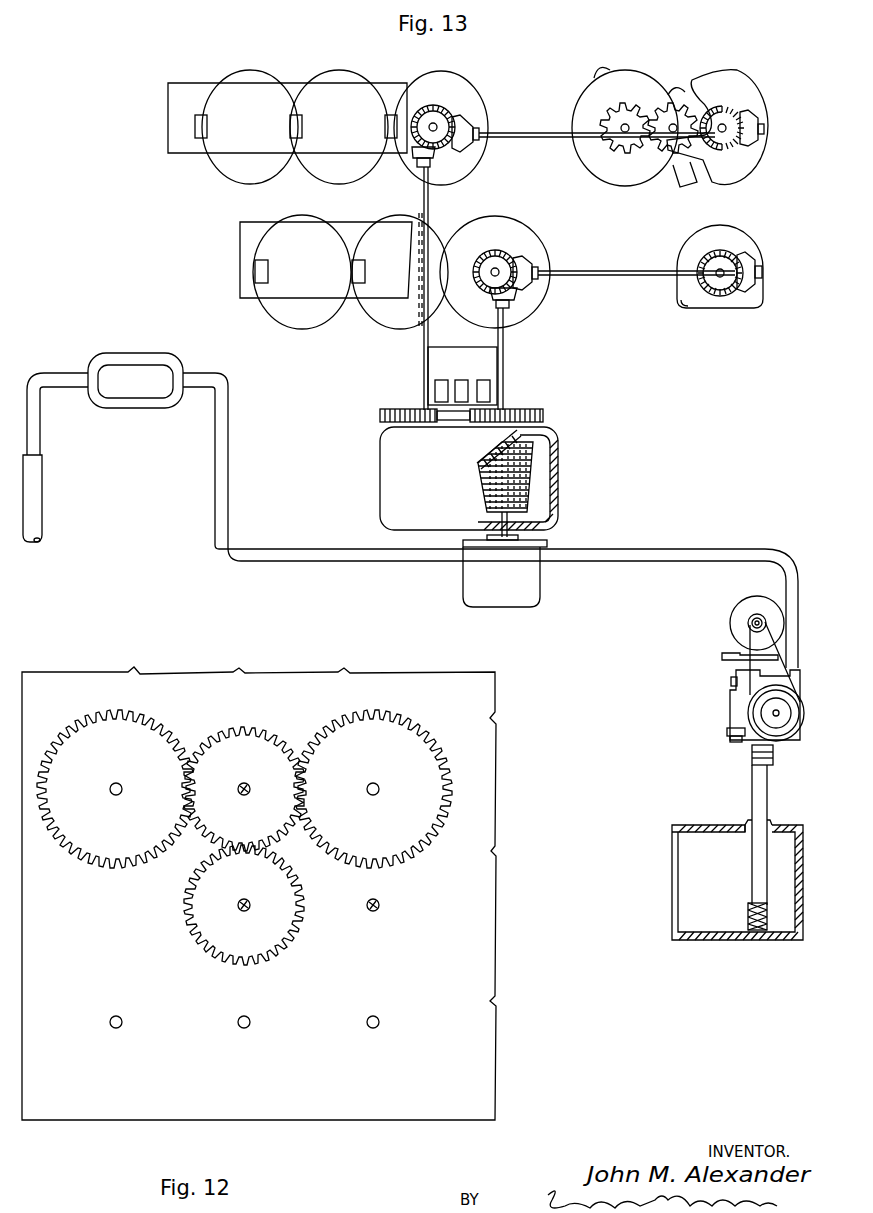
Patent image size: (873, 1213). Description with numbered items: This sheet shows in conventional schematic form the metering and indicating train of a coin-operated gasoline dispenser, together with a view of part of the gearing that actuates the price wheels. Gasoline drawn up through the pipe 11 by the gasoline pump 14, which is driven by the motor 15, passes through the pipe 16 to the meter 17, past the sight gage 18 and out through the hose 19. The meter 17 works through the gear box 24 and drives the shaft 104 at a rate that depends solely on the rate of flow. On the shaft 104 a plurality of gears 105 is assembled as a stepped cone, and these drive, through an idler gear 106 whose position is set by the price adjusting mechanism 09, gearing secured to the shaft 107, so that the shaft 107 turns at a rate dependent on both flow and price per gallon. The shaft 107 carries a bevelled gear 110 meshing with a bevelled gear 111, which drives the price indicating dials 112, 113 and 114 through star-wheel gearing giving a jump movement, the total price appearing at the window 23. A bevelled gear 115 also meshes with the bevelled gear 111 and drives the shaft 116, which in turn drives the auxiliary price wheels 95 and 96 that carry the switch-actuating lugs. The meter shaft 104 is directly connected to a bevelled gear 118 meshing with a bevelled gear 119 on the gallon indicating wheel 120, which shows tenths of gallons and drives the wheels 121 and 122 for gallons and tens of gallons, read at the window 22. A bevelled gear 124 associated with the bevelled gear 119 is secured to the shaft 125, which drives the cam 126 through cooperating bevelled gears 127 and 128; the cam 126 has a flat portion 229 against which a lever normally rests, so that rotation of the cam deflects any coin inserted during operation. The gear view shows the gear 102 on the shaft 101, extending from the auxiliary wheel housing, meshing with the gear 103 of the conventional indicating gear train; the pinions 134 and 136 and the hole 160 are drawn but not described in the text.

In FIG. 13, the pipe 11 is at (756, 791).
In FIG. 13, the gasoline pump 14 is at (733, 710).
In FIG. 13, the motor 15 is at (734, 619).
In FIG. 13, the pipe 16 is at (684, 555).
In FIG. 13, the meter 17 is at (528, 582).
In FIG. 13, the sight gage 18 is at (150, 386).
In FIG. 13, the hose 19 is at (40, 508).
In FIG. 13, the window 22 is at (258, 272).
In FIG. 13, the window 23 is at (193, 142).
In FIG. 13, the gear box 24 is at (395, 478).
In FIG. 13, the indicating wheel 95 is at (652, 92).
In FIG. 13, the indicating wheel 96 is at (725, 82).
In FIG. 13, the price adjusting mechanism 09 is at (503, 362).
In FIG. 12, the shaft 101 is at (238, 908).
In FIG. 12, the gear 102 is at (216, 946).
In FIG. 12, the gear 103 is at (258, 748).
In FIG. 13, the shaft 104 is at (505, 386).
In FIG. 13, the gears 105 is at (532, 479).
In FIG. 13, the idler gear 106 is at (481, 473).
In FIG. 13, the shaft 107 is at (426, 376).
In FIG. 13, the bevelled gear 110 is at (433, 162).
In FIG. 13, the bevelled gear 111 is at (447, 118).
In FIG. 13, the price indicating dial 112 is at (237, 78).
In FIG. 13, the price indicating dial 113 is at (319, 78).
In FIG. 13, the price indicating dial 114 is at (413, 80).
In FIG. 13, the bevelled gear 115 is at (468, 130).
In FIG. 13, the shaft 116 is at (542, 143).
In FIG. 13, the bevelled gear 118 is at (520, 294).
In FIG. 13, the bevelled gear 119 is at (511, 255).
In FIG. 13, the gallon indicating wheel 120 is at (462, 308).
In FIG. 13, the wheel 121 is at (384, 218).
In FIG. 13, the wheel 122 is at (312, 218).
In FIG. 13, the bevelled gear 124 is at (531, 265).
In FIG. 13, the shaft 125 is at (641, 278).
In FIG. 13, the cam 126 is at (738, 244).
In FIG. 13, the bevelled gear 127 is at (749, 272).
In FIG. 13, the bevelled gear 128 is at (720, 297).
In FIG. 13, the pinion 134 is at (622, 100).
In FIG. 13, the pinion 136 is at (681, 118).
In FIG. 12, the shaft hole 160 is at (380, 903).
In FIG. 13, the flat portion 229 is at (701, 309).